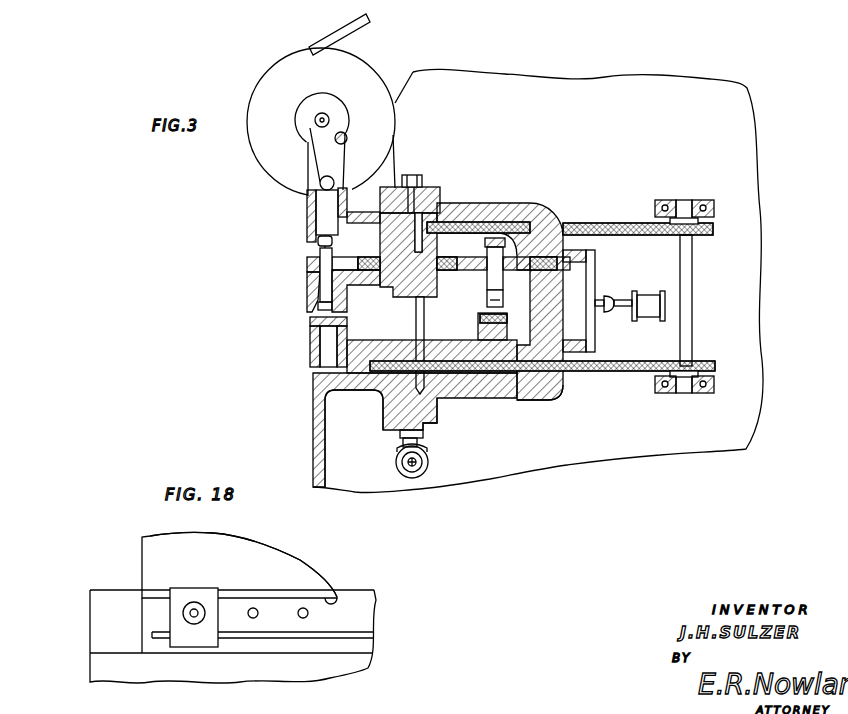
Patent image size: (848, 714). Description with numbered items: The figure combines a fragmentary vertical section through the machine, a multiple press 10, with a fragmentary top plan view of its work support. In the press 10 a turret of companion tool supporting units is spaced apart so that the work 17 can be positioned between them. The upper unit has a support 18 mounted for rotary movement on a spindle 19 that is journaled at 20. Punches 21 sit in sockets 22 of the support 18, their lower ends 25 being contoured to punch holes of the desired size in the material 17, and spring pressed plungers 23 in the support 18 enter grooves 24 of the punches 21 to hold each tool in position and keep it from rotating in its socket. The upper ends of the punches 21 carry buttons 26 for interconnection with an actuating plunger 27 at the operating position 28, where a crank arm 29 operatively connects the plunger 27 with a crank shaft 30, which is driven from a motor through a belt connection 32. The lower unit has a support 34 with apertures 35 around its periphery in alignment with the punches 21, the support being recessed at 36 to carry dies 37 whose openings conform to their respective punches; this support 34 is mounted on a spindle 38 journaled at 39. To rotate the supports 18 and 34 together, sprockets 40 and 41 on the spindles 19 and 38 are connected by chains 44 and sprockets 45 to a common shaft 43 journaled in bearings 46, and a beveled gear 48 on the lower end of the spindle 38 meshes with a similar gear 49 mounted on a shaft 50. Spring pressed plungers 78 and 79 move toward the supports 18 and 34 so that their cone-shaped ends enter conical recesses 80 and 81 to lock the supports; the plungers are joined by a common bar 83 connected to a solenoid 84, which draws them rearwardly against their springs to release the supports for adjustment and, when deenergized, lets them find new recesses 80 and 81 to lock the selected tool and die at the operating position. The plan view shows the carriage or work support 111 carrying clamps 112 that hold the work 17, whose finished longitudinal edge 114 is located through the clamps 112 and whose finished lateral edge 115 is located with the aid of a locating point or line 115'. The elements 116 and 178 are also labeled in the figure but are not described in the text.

In FIG. 3, the multiple press 10 is at (752, 164).
In FIG. 18, the work 17 is at (260, 548).
In FIG. 3, the support 18 is at (438, 298).
In FIG. 3, the spindle 19 is at (404, 156).
In FIG. 3, the journal 20 is at (438, 185).
In FIG. 3, the punches 21 is at (327, 292).
In FIG. 3, the sockets 22 is at (318, 283).
In FIG. 3, the spring pressed plungers 23 is at (350, 282).
In FIG. 3, the grooves 24 is at (316, 275).
In FIG. 3, the lower ends of the tools 25 is at (317, 307).
In FIG. 3, the buttons 26 is at (318, 238).
In FIG. 3, the actuating plunger 27 is at (325, 213).
In FIG. 3, the operating position 28 is at (306, 200).
In FIG. 3, the crank arm 29 is at (345, 160).
In FIG. 3, the crank shaft 30 is at (317, 118).
In FIG. 3, the belt connection 32 is at (340, 34).
In FIG. 3, the support 34 is at (374, 353).
In FIG. 3, the apertures 35 is at (313, 338).
In FIG. 3, the recesses 36 is at (343, 324).
In FIG. 3, the dies 37 is at (312, 322).
In FIG. 3, the spindle 38 is at (392, 414).
In FIG. 3, the journal 39 is at (438, 412).
In FIG. 3, the sprocket 40 is at (380, 206).
In FIG. 3, the sprocket 41 is at (377, 390).
In FIG. 3, the common shaft 43 is at (693, 335).
In FIG. 3, the chains 44 is at (633, 222).
In FIG. 3, the sprockets 45 is at (684, 218).
In FIG. 3, the bearings 46 is at (698, 204).
In FIG. 3, the beveled gear 48 is at (428, 445).
In FIG. 3, the gear 49 is at (396, 462).
In FIG. 3, the shaft 50 is at (412, 470).
In FIG. 3, the spring pressed plunger 78 is at (528, 200).
In FIG. 3, the spring pressed plunger 79 is at (532, 365).
In FIG. 3, the conical recesses 80 is at (310, 265).
In FIG. 3, the conical recesses 81 is at (310, 352).
In FIG. 3, the common bar 83 is at (595, 331).
In FIG. 3, the solenoid 84 is at (655, 292).
In FIG. 18, the work support 111 is at (216, 678).
In FIG. 18, the clamps 112 is at (213, 600).
In FIG. 18, the finished longitudinal edge 114 is at (338, 603).
In FIG. 18, the finished lateral edge 115 is at (214, 565).
In FIG. 18, the locating point or line 115' is at (114, 610).
In FIG. 18, the rail 116 is at (363, 618).
In FIG. 3, the wheel 178 is at (272, 72).